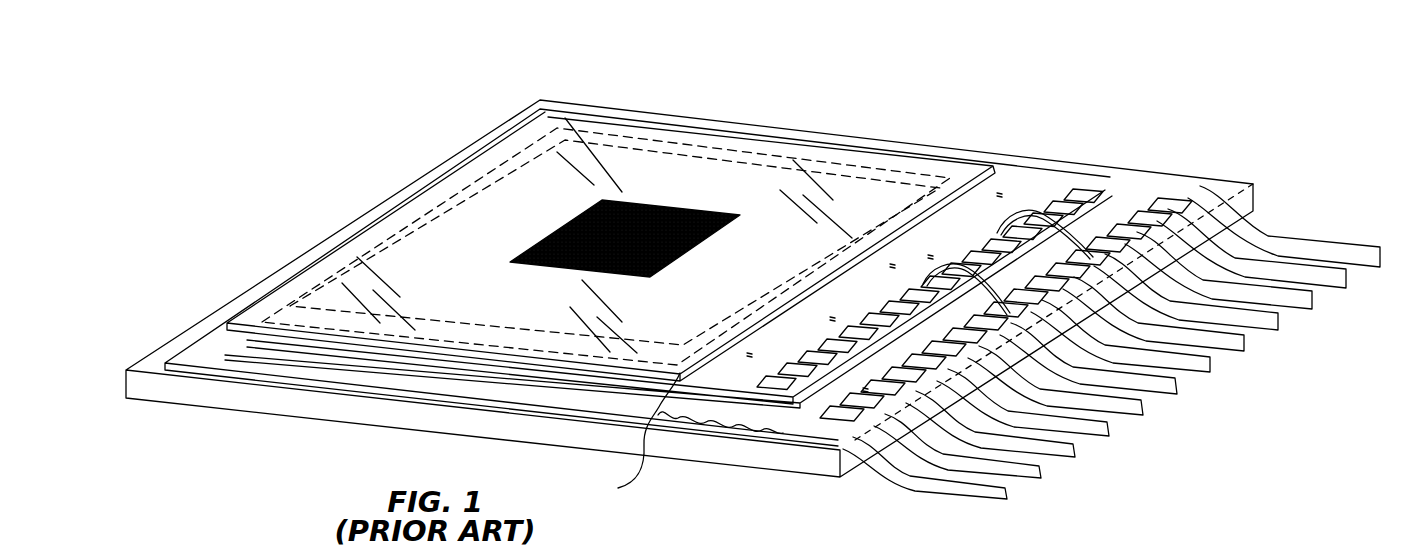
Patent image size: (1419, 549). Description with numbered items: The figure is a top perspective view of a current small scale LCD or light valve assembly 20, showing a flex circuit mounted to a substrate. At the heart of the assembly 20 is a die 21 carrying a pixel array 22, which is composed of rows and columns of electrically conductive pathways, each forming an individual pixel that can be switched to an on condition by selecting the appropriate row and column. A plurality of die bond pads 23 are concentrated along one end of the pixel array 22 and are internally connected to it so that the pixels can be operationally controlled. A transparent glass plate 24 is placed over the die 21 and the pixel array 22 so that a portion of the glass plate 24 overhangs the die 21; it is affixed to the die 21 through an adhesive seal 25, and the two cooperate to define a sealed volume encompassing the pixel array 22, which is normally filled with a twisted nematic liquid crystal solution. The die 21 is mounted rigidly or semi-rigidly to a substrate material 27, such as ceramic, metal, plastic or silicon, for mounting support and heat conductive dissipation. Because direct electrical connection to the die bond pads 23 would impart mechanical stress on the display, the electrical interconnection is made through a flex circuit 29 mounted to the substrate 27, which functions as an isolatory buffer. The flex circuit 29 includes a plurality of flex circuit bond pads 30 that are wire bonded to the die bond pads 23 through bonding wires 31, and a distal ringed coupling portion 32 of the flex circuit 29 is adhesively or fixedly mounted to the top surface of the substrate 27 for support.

The small scale LCD assembly 20 is at (268, 118).
The die 21 is at (1024, 180).
The pixel array 22 is at (698, 210).
The die bond pads 23 is at (1067, 197).
The transparent glass plate 24 is at (899, 145).
The adhesive seal 25 is at (667, 158).
The substrate material 27 is at (230, 395).
The flex circuit 29 is at (1112, 303).
The flex circuit bond pads 30 is at (1213, 182).
The bonding wires 31 is at (1150, 192).
The distal ringed coupling portion 32 is at (200, 353).